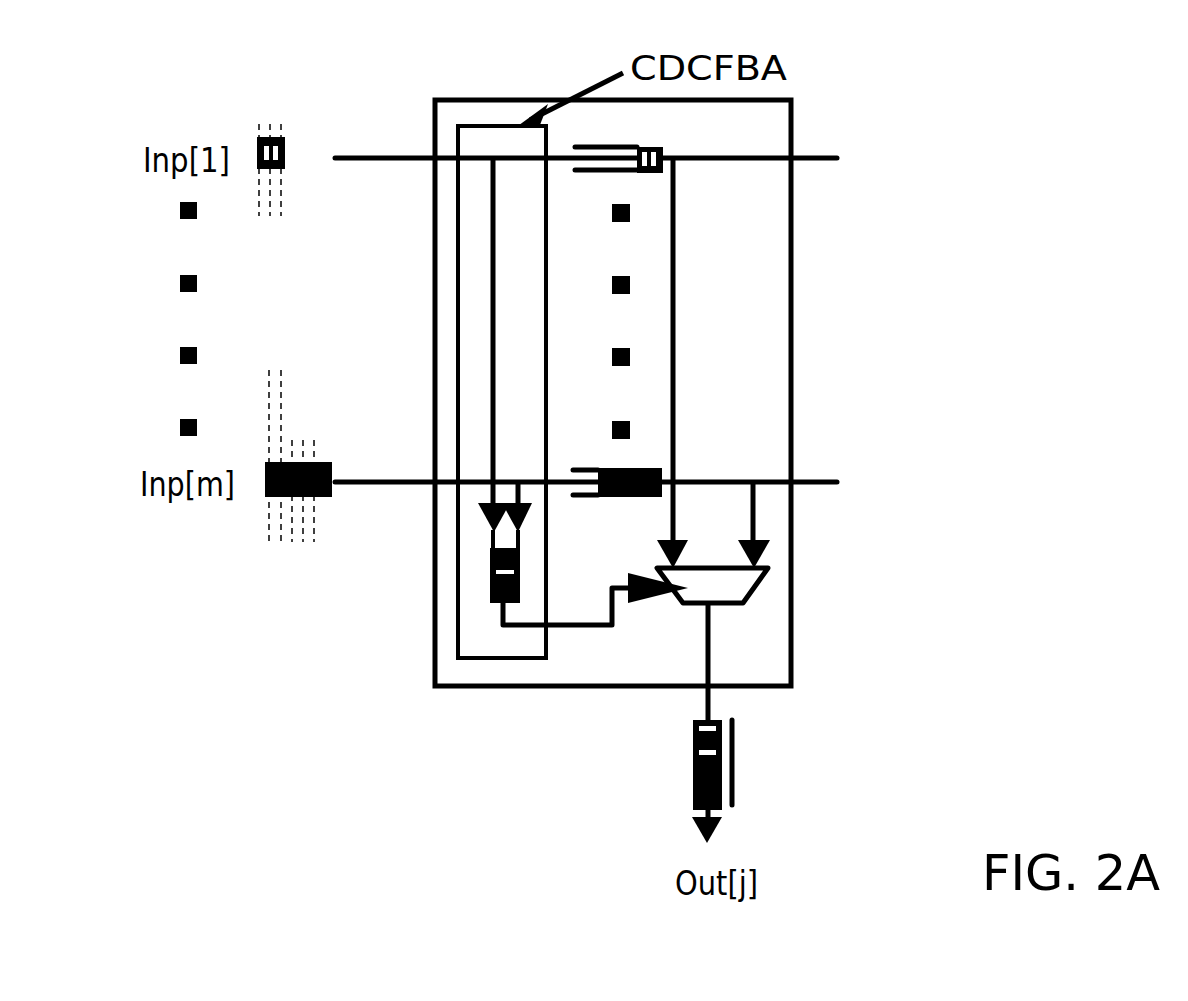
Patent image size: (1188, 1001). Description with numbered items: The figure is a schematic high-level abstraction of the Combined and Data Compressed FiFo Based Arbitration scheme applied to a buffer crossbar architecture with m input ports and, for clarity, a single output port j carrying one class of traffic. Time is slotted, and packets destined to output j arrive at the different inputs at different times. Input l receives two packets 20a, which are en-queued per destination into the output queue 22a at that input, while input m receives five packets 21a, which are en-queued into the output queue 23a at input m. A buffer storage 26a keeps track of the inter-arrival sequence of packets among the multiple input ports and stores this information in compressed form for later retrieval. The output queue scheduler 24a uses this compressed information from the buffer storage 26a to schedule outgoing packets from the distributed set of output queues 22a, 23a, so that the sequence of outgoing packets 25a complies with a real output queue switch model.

The packets received at input port l 20a is at (275, 135).
The packets received at input port m 21a is at (292, 460).
The output queue at input l 22a is at (663, 147).
The output queue at input m 23a is at (660, 468).
The output queue scheduler 24a is at (765, 585).
The sequence of outgoing packets 25a is at (733, 767).
The buffer storage 26a is at (490, 573).